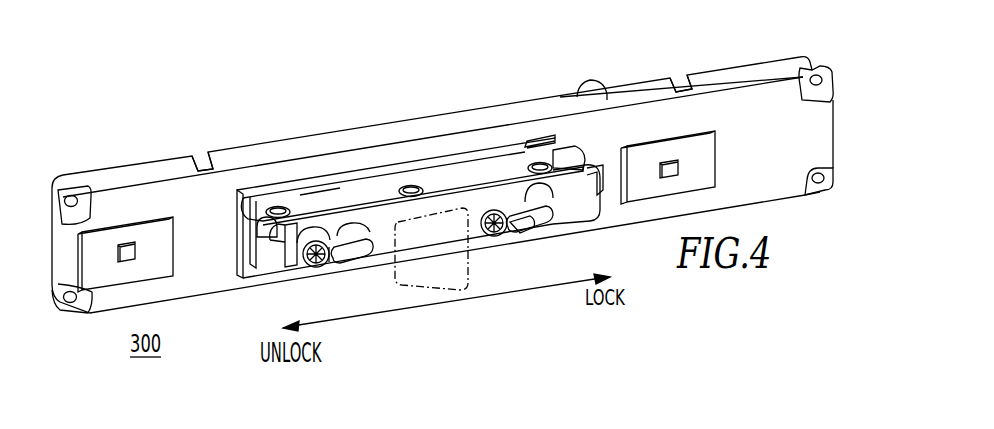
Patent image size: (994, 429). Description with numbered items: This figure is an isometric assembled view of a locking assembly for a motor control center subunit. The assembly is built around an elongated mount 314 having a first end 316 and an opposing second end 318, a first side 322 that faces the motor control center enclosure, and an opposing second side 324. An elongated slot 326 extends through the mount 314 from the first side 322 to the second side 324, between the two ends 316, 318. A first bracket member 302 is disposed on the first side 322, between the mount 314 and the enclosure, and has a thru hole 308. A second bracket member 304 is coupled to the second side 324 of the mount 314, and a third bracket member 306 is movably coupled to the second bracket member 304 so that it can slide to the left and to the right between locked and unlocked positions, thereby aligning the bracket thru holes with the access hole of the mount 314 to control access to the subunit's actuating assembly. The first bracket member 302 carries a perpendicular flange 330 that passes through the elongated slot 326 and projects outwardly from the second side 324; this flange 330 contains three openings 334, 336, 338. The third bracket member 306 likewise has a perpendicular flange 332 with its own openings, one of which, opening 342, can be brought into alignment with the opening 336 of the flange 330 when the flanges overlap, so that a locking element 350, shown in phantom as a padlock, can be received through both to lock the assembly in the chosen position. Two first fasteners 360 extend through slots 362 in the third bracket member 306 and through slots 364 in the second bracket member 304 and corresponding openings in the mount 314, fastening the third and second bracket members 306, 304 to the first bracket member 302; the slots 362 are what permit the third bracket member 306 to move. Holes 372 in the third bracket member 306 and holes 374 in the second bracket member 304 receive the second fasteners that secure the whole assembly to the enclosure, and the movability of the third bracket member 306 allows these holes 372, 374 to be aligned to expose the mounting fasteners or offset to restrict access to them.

The first bracket member 302 is at (293, 195).
The second bracket member 304 is at (247, 267).
The third bracket member 306 is at (418, 199).
The thru hole 308 is at (458, 182).
The mount 314 is at (723, 105).
The first end 316 is at (815, 198).
The second end 318 is at (63, 170).
The first side 322 is at (612, 95).
The second side 324 is at (683, 76).
The elongated slot 326 is at (350, 186).
The perpendicular flange 330 is at (308, 190).
The perpendicular flange 332 is at (560, 147).
The opening 334 is at (537, 161).
The opening 336 is at (408, 184).
The opening 338 is at (245, 203).
The opening 342 is at (420, 176).
The locking element 350 is at (422, 286).
The first fastener 360 is at (322, 267).
The slot 362 is at (366, 256).
The slot 364 is at (337, 260).
The hole 372 is at (302, 266).
The hole 374 is at (277, 238).